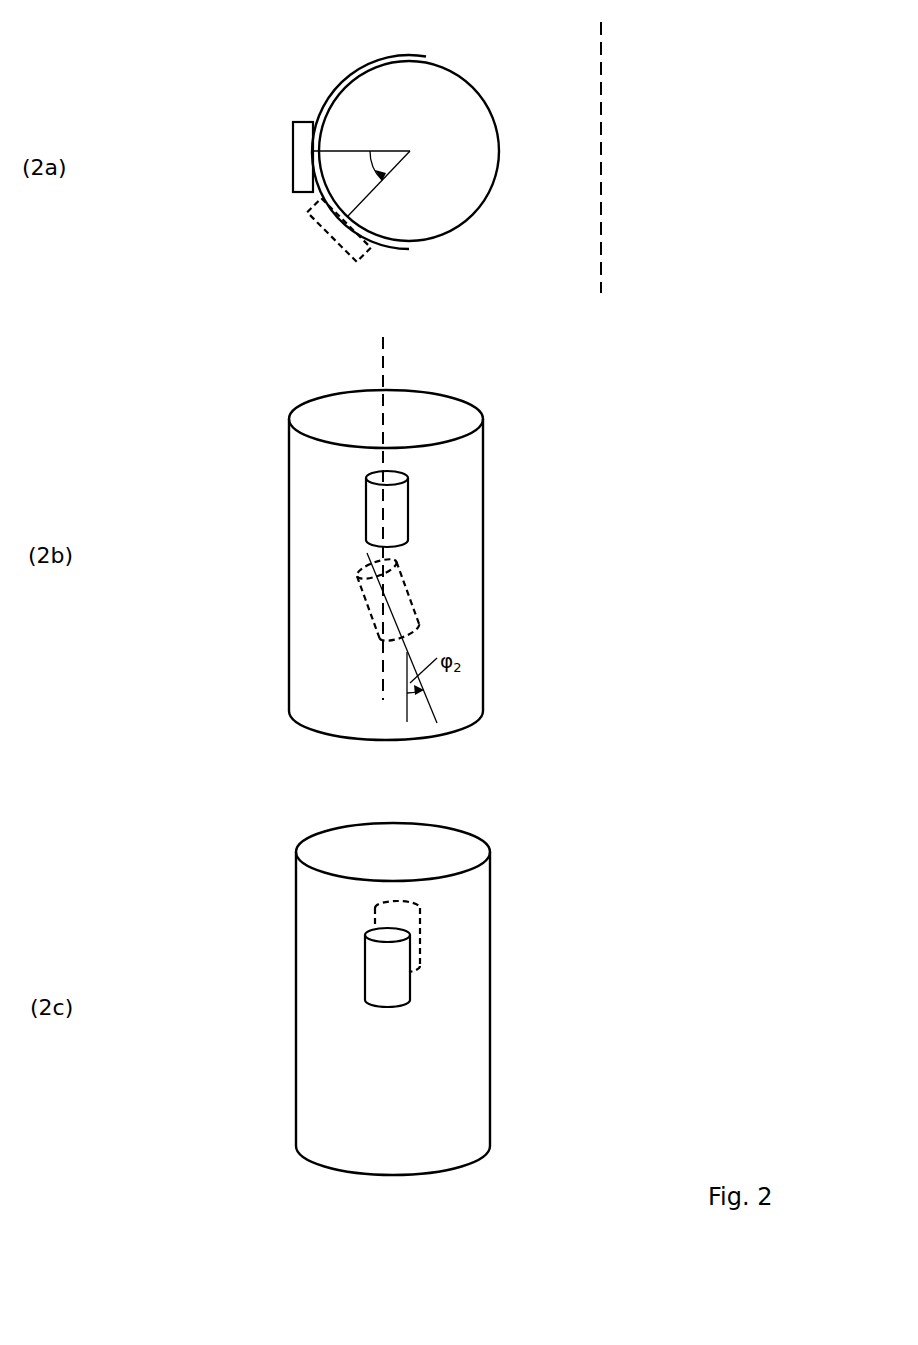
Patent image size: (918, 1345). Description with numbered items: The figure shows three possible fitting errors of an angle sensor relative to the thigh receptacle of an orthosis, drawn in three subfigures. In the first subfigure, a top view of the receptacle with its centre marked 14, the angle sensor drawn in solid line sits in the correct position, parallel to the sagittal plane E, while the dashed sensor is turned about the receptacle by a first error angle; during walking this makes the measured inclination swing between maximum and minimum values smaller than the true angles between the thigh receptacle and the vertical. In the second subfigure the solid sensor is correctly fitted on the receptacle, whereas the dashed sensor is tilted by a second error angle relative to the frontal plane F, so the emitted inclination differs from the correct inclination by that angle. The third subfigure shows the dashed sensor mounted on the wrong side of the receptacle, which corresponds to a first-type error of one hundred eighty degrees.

The centre axis 14 is at (376, 166).
The sagittal plane E is at (601, 265).
The frontal plane F is at (383, 380).